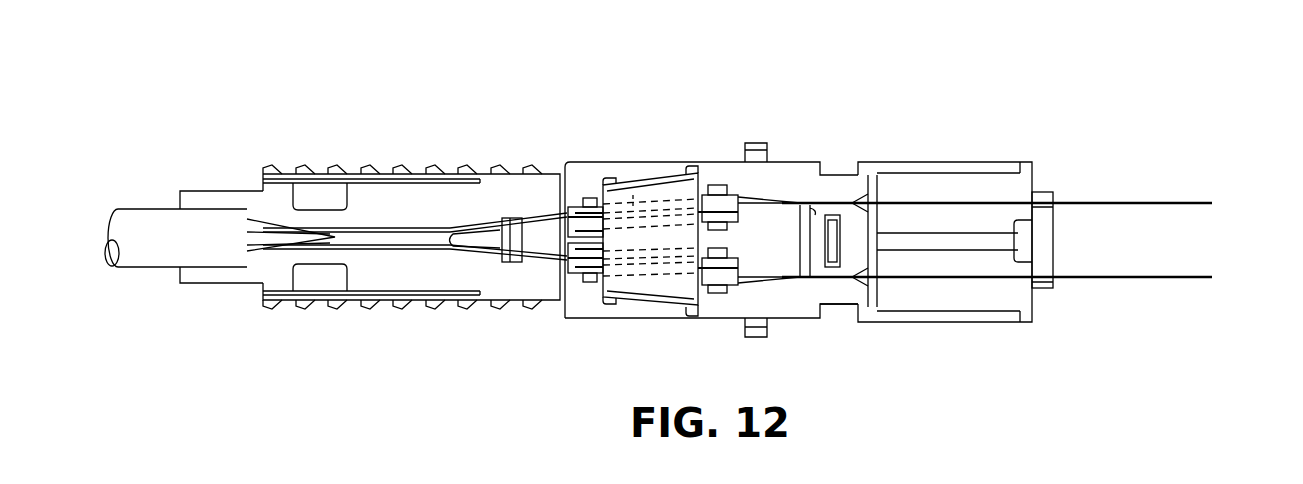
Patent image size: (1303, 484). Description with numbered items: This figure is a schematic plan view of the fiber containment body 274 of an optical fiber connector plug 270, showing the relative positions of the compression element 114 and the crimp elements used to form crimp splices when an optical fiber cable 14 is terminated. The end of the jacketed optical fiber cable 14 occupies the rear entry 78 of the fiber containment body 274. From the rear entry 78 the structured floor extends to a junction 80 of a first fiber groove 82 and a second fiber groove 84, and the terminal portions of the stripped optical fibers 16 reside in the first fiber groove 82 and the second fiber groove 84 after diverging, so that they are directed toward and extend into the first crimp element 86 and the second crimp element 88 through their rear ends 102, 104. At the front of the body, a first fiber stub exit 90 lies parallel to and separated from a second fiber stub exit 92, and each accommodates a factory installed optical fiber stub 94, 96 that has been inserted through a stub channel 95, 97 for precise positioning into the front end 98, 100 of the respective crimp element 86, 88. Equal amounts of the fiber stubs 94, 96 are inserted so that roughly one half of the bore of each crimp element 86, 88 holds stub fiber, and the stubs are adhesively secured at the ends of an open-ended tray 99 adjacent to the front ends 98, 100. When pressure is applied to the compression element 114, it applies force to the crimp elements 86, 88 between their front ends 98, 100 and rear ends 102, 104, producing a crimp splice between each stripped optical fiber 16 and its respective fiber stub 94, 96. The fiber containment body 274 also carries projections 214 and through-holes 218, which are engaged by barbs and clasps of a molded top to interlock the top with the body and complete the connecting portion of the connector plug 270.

The optical fiber cable 14 is at (150, 258).
The optical fibers 16 is at (287, 233).
The rear entry 78 is at (262, 225).
The junction 80 is at (363, 250).
The first fiber groove 82 is at (477, 223).
The second fiber groove 84 is at (465, 248).
The first crimp element 86 is at (620, 187).
The second crimp element 88 is at (640, 280).
The first fiber stub exit 90 is at (1010, 190).
The second fiber stub exit 92 is at (1008, 295).
The first optical fiber stub 94 is at (1133, 202).
The first stub channel 95 is at (788, 203).
The second optical fiber stub 96 is at (1133, 277).
The second stub channel 97 is at (787, 320).
The front end of first crimp element 98 is at (718, 188).
The open-ended tray 99 is at (830, 203).
The front end of second crimp element 100 is at (720, 290).
The rear end of first crimp element 102 is at (583, 202).
The rear end of second crimp element 104 is at (590, 270).
The compression element 114 is at (658, 188).
The projections 214 is at (758, 145).
The through-holes 218 is at (330, 272).
The optical fiber connector plug 270 is at (664, 105).
The fiber containment body 274 is at (810, 322).